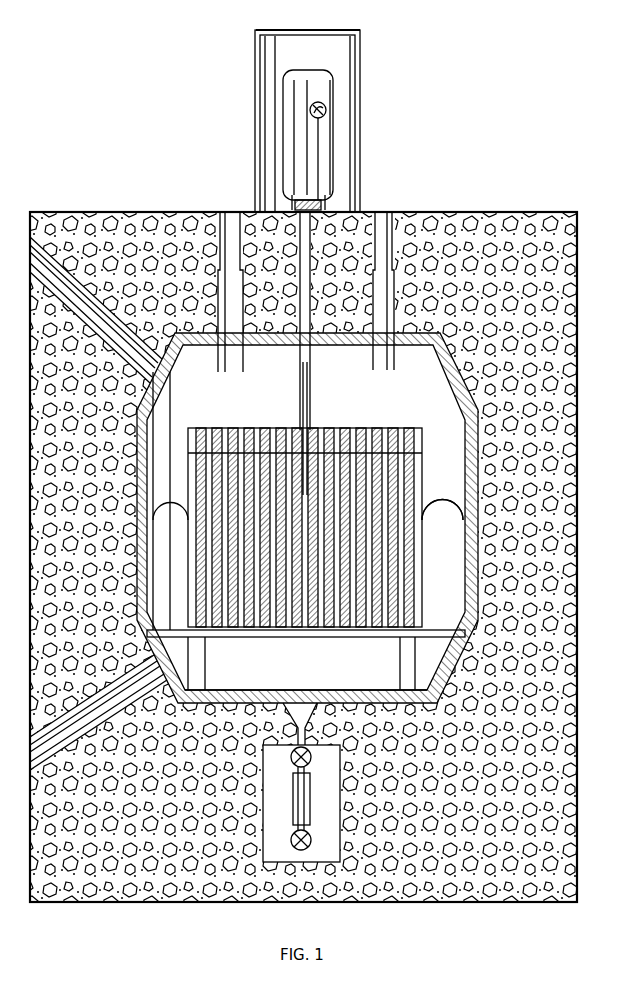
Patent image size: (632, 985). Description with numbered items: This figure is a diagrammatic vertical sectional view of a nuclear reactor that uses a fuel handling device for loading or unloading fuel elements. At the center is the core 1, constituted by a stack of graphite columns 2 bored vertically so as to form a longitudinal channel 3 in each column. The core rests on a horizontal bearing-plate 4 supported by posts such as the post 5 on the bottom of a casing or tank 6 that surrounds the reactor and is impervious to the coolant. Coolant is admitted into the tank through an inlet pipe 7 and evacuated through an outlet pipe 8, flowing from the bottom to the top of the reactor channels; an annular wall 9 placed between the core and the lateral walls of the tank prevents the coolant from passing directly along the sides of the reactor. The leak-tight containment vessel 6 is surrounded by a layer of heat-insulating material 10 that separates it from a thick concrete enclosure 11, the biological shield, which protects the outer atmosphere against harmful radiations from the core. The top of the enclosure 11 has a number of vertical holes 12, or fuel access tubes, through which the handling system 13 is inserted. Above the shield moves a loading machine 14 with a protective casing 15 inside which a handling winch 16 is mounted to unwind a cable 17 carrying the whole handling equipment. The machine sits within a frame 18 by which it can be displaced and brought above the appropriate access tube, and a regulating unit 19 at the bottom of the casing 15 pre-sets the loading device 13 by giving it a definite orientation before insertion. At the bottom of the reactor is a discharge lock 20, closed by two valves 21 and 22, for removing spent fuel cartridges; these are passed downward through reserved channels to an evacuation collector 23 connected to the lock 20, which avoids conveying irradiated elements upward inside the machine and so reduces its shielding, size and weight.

The core 1 is at (423, 470).
The graphite columns 2 is at (422, 452).
The longitudinal channel 3 is at (380, 428).
The horizontal bearing-plate 4 is at (244, 631).
The post 5 is at (205, 658).
The casing or tank 6 is at (243, 700).
The inlet pipe 7 is at (30, 750).
The outlet pipe 8 is at (30, 252).
The annular wall 9 is at (442, 514).
The layer of heat-insulating material 10 is at (464, 546).
The enclosure 11 is at (578, 503).
The vertical holes or fuel access tubes 12 is at (384, 218).
The handling system 13 is at (308, 400).
The loading machine 14 is at (255, 57).
The protective casing 15 is at (325, 70).
The handling winch 16 is at (313, 103).
The cable 17 is at (306, 165).
The frame 18 is at (323, 31).
The regulating unit 19 is at (322, 207).
The discharge lock 20 is at (293, 797).
The valve 21 is at (311, 840).
The valve 22 is at (311, 757).
The evacuation collector 23 is at (305, 703).